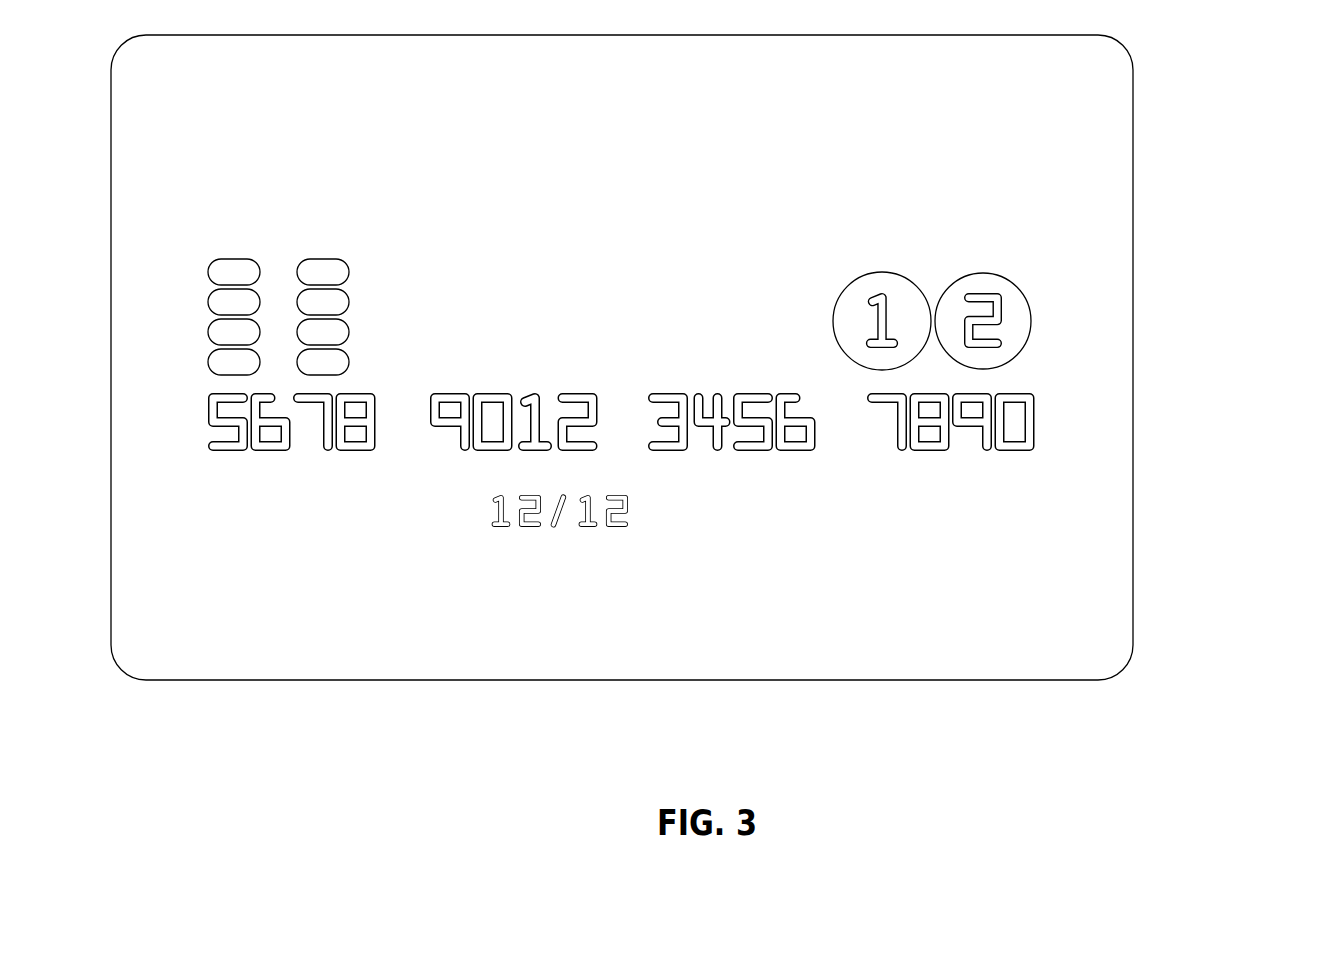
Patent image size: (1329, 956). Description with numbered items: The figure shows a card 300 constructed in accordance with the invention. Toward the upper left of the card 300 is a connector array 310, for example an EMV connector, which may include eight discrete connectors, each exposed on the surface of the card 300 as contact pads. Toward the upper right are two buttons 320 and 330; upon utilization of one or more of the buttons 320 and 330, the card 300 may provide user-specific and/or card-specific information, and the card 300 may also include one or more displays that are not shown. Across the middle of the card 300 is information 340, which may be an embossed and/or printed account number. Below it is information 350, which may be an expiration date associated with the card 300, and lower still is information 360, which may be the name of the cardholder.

The card 300 is at (1296, 330).
The connector array 310 is at (278, 288).
The button 320 is at (868, 273).
The button 330 is at (968, 273).
The information 340 is at (1030, 445).
The information 350 is at (627, 505).
The information 360 is at (430, 578).